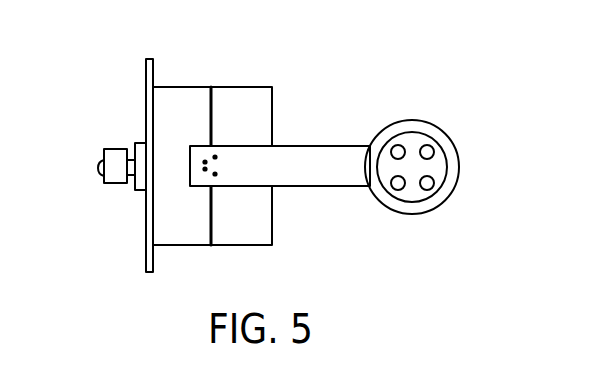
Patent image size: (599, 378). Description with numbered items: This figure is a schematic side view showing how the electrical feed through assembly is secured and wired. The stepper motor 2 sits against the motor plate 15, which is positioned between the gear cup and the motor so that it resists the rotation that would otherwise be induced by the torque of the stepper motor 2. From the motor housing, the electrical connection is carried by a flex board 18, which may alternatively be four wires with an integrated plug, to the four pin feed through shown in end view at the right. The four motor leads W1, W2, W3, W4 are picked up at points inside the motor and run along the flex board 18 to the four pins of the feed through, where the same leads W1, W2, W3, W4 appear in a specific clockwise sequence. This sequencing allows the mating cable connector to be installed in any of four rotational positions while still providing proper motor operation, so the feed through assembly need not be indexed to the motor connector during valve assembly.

The stepper motor 2 is at (187, 87).
The motor plate 15 is at (146, 250).
The flex board 18 is at (328, 186).
The wire W1 is at (205, 160).
The wire W2 is at (215, 157).
The wire W3 is at (215, 174).
The wire W4 is at (205, 169).